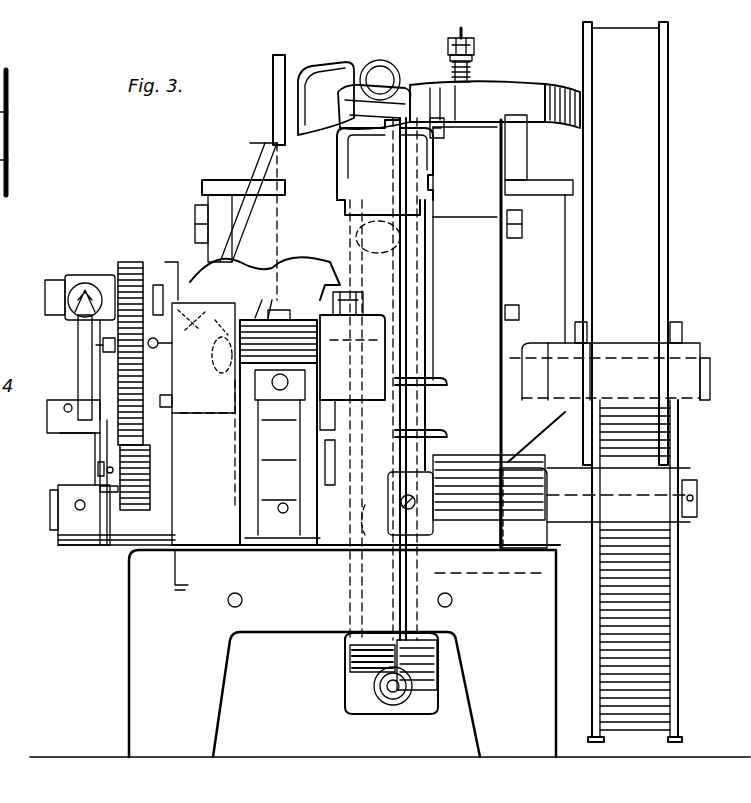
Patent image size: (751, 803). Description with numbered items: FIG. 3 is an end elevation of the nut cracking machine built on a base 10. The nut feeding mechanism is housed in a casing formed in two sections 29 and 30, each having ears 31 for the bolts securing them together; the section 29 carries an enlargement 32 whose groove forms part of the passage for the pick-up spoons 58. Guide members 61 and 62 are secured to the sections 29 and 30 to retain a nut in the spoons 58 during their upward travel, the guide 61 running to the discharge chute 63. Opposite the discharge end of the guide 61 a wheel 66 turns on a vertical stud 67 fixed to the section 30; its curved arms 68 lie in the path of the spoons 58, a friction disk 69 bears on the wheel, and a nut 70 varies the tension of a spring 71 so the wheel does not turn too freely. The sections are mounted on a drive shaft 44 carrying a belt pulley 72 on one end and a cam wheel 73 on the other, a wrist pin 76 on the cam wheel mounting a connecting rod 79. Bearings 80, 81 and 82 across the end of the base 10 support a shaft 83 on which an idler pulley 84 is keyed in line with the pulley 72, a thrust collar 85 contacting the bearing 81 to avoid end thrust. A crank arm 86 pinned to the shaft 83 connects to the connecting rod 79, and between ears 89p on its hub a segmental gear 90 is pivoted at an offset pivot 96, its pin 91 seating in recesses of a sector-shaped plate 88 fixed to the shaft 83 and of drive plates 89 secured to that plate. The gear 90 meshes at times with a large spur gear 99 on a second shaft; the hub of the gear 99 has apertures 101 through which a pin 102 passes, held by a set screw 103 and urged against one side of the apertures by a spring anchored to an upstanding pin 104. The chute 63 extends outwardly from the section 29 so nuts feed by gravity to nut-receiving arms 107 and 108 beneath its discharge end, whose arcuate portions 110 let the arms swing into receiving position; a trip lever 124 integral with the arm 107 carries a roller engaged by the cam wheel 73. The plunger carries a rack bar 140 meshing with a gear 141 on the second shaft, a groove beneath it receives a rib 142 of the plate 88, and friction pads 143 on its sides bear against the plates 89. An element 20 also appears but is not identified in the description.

The base 10 is at (127, 600).
The frame column 20 is at (548, 212).
The casing section 29 is at (335, 228).
The casing section 30 is at (425, 254).
The ears 31 is at (430, 165).
The enlargement 32 is at (352, 662).
The drive shaft 44 is at (652, 345).
The pick-up spoons 58 is at (384, 60).
The guide member 61 is at (320, 72).
The guide member 62 is at (14, 113).
The discharge chute 63 is at (250, 182).
The wheel 66 is at (508, 78).
The vertical stud 67 is at (462, 36).
The curved arms 68 is at (552, 126).
The friction disk 69 is at (445, 82).
The nut 70 is at (474, 56).
The spring 71 is at (472, 70).
The belt pulley 72 is at (655, 158).
The cam wheel 73 is at (198, 403).
The wrist pin 76 is at (58, 290).
The connecting rod 79 is at (78, 337).
The bearing 80 is at (185, 520).
The bearing 81 is at (335, 512).
The bearing 82 is at (527, 540).
The shaft 83 is at (56, 508).
The idler pulley 84 is at (678, 530).
The thrust collar 85 is at (428, 480).
The crank arm 86 is at (60, 437).
The sector-shaped plate 88 is at (260, 503).
The drive plates 89 is at (322, 455).
The ears 89p is at (160, 510).
The segmental gear 90 is at (120, 453).
The pin 91 is at (100, 489).
The pivot 96 is at (98, 470).
The large spur gear 99 is at (120, 270).
The apertures 101 is at (191, 358).
The pin 102 is at (160, 352).
The set screw 103 is at (102, 346).
The upstanding pin 104 is at (160, 292).
The nut-receiving arm 107 is at (210, 268).
The nut-receiving arm 108 is at (335, 283).
The arcuate portions 110 is at (258, 268).
The trip lever 124 is at (263, 299).
The rack bar 140 is at (320, 358).
The gear 141 is at (296, 318).
The rib 142 is at (325, 412).
The friction pads 143 is at (252, 386).